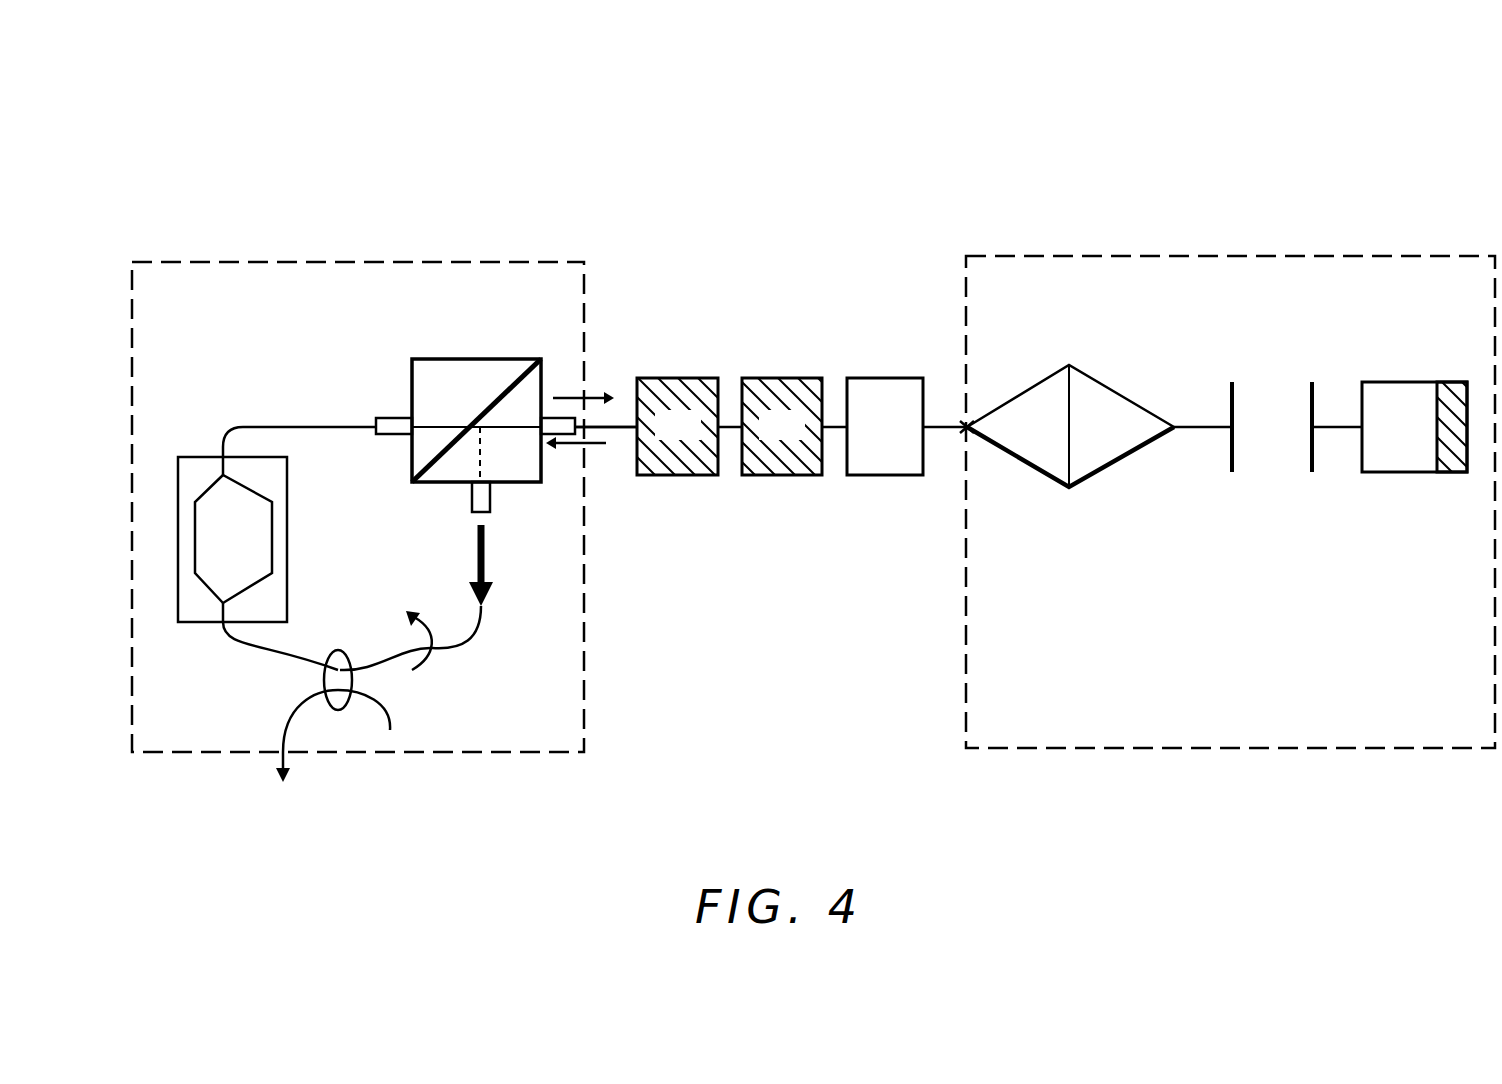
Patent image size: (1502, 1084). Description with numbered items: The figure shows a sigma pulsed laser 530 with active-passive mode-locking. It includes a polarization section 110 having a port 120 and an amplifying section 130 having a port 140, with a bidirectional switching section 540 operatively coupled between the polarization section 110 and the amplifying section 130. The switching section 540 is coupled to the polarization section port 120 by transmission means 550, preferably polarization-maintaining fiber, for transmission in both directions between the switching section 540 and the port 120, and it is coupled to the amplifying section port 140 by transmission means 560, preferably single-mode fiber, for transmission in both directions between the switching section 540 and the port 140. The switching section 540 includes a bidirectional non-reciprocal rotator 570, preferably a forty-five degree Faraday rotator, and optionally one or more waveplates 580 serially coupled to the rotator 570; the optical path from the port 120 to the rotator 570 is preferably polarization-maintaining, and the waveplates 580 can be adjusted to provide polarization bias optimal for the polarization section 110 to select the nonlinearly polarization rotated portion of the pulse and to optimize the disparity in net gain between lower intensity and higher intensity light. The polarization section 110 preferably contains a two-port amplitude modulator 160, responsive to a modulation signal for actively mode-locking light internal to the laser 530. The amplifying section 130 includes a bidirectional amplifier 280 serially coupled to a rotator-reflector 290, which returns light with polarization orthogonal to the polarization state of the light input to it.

The sigma pulsed laser 530 is at (730, 159).
The polarization section 110 is at (331, 285).
The port 120 is at (600, 414).
The amplifying section 130 is at (1140, 276).
The port 140 is at (967, 427).
The two-port amplitude modulator 160 is at (273, 588).
The bidirectional switching section 540 is at (928, 356).
The transmission means 550 is at (620, 434).
The transmission means 560 is at (938, 435).
The bidirectional non-reciprocal rotator 570 is at (877, 477).
The waveplates 580 is at (782, 477).
The bidirectional amplifier 280 is at (1113, 452).
The rotator-reflector 290 is at (1403, 470).